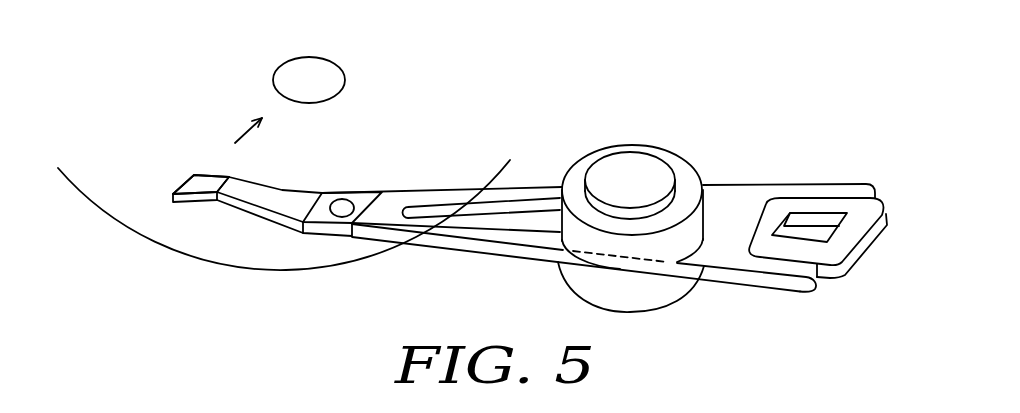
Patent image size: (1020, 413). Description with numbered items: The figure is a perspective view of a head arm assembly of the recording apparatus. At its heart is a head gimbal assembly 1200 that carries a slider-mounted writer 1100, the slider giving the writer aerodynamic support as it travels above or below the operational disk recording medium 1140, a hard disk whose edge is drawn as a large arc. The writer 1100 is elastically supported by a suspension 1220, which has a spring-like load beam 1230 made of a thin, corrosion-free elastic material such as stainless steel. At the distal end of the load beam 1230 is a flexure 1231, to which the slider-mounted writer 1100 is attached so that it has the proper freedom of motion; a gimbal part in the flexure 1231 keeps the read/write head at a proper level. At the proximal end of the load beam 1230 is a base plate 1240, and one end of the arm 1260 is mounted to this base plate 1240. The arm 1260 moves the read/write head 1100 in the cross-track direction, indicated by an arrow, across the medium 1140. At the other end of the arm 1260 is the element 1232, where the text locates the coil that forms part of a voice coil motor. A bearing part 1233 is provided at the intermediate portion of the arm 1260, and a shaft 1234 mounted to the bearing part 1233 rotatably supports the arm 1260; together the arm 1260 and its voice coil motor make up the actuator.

The slider-mounted writer 1100 is at (195, 178).
The disk recording medium 1140 is at (172, 251).
The head gimbal assembly 1200 is at (285, 240).
The suspension 1220 is at (490, 145).
The load beam 1230 is at (300, 200).
The flexure 1231 is at (173, 194).
The coil support (tail plate) 1232 is at (855, 245).
The bearing part 1233 is at (582, 168).
The shaft 1234 is at (634, 168).
The base plate 1240 is at (373, 190).
The arm 1260 is at (447, 243).